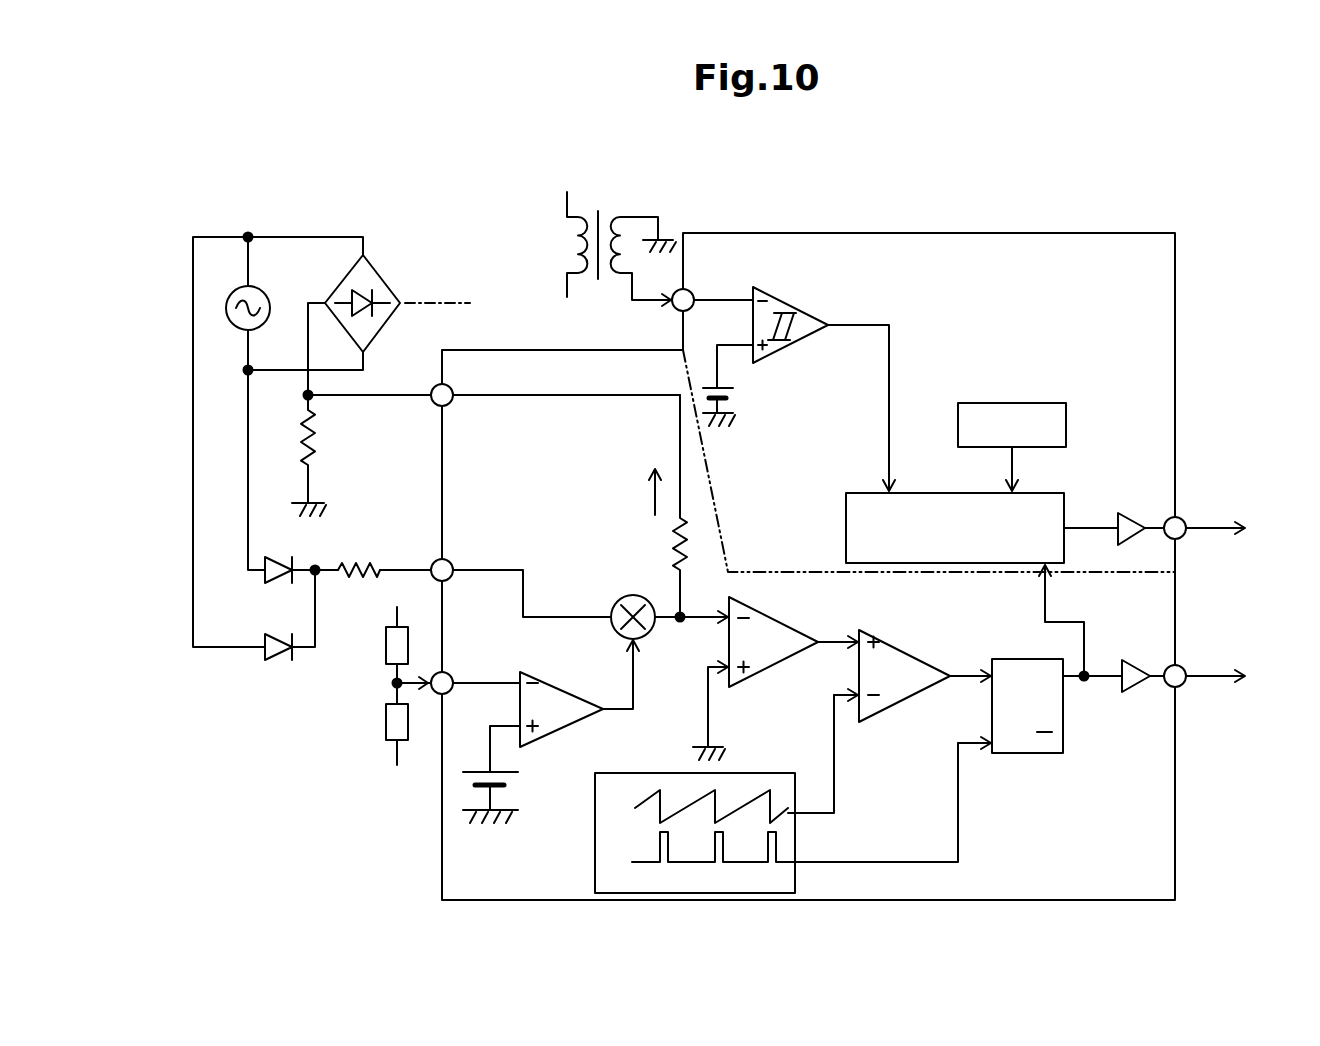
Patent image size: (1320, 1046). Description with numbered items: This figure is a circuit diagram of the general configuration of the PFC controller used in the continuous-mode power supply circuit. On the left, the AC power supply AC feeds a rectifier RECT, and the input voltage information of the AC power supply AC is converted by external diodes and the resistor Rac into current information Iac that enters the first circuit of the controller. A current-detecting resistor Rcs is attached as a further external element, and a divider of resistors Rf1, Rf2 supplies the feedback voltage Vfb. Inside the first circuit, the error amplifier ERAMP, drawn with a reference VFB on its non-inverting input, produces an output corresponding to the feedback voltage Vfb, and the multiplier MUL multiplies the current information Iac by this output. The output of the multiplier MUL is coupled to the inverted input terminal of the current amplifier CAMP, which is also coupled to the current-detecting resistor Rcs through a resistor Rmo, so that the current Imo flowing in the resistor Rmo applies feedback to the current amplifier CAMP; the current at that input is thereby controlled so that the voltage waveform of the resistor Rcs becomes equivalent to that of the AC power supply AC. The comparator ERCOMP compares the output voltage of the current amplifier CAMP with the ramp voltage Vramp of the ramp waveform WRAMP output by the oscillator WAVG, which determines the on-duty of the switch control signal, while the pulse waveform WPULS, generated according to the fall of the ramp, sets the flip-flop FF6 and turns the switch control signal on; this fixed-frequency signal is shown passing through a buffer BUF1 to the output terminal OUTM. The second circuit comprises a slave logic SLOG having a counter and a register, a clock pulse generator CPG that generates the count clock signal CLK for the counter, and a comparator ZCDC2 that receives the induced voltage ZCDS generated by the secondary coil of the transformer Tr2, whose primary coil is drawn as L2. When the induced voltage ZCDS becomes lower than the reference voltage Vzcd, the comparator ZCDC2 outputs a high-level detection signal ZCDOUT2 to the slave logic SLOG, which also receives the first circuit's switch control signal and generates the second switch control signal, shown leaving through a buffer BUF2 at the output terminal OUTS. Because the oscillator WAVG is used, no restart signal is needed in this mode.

The AC power supply AC is at (232, 308).
The rectifier RECT is at (407, 243).
The current-detecting resistor Rcs is at (328, 455).
The resistor Rac is at (345, 562).
The feedback resistor 1 Rf1 is at (385, 640).
The feedback resistor 2 Rf2 is at (385, 718).
The feedback voltage Vfb is at (446, 672).
The transformer Tr2 is at (585, 224).
The inductor winding L2 is at (560, 248).
The induced voltage ZCDS is at (645, 300).
The comparator ZCDC2 is at (789, 348).
The reference voltage Vzcd is at (743, 385).
The detection signal ZCDOUT2 is at (855, 320).
The clock pulse generator CPG is at (1012, 425).
The count clock signal CLK is at (1012, 470).
The slave logic SLOG is at (955, 528).
The buffer 2 BUF2 is at (1133, 503).
The output terminal S OUTS is at (1182, 520).
The resistor Rmo is at (650, 506).
The current Imo is at (635, 492).
The current information Iac is at (511, 566).
The multiplier MUL is at (651, 640).
The error amplifier ERAMP is at (566, 730).
The feedback reference voltage VFB is at (506, 774).
The oscillator WAVG is at (688, 834).
The ramp waveform WRAMP is at (657, 810).
The pulse waveform WPULS is at (655, 848).
The current amplifier CAMP is at (772, 613).
The ramp voltage Vramp is at (708, 716).
The comparator ERCOMP is at (893, 642).
The flip-flop FF6 is at (1040, 755).
The buffer 1 BUF1 is at (1139, 653).
The output terminal M OUTM is at (1182, 668).